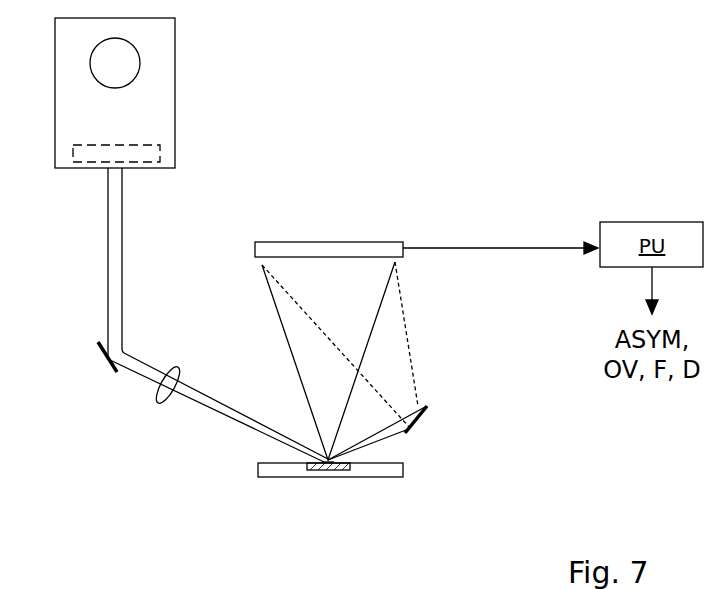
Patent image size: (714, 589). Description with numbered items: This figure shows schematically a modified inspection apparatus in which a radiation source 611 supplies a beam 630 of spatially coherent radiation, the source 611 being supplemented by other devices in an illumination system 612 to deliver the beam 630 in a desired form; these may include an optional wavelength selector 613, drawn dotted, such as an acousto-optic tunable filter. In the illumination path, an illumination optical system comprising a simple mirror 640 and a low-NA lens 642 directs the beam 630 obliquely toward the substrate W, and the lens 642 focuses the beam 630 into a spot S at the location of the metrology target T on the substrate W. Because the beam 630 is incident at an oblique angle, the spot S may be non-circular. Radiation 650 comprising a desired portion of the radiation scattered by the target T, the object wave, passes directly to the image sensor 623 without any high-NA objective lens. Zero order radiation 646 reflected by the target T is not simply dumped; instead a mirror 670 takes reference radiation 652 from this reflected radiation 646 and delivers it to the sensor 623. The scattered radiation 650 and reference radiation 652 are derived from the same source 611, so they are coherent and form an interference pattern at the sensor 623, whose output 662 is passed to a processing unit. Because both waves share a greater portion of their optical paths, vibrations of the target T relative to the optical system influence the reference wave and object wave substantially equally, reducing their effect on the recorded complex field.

The radiation source 611 is at (138, 76).
The illumination system 612 is at (175, 128).
The wavelength selector 613 is at (160, 152).
The beam 630 is at (108, 232).
The mirror 640 is at (98, 352).
The low-NA lens 642 is at (163, 402).
The image sensor 623 is at (365, 242).
The detector output signal to processing unit 662 is at (503, 247).
The scattered radiation 650 is at (298, 372).
The reference radiation 652 is at (405, 328).
The mirror 670 is at (428, 406).
The reflected radiation 646 is at (393, 437).
The spot S is at (312, 458).
The substrate W is at (258, 470).
The target T is at (398, 460).